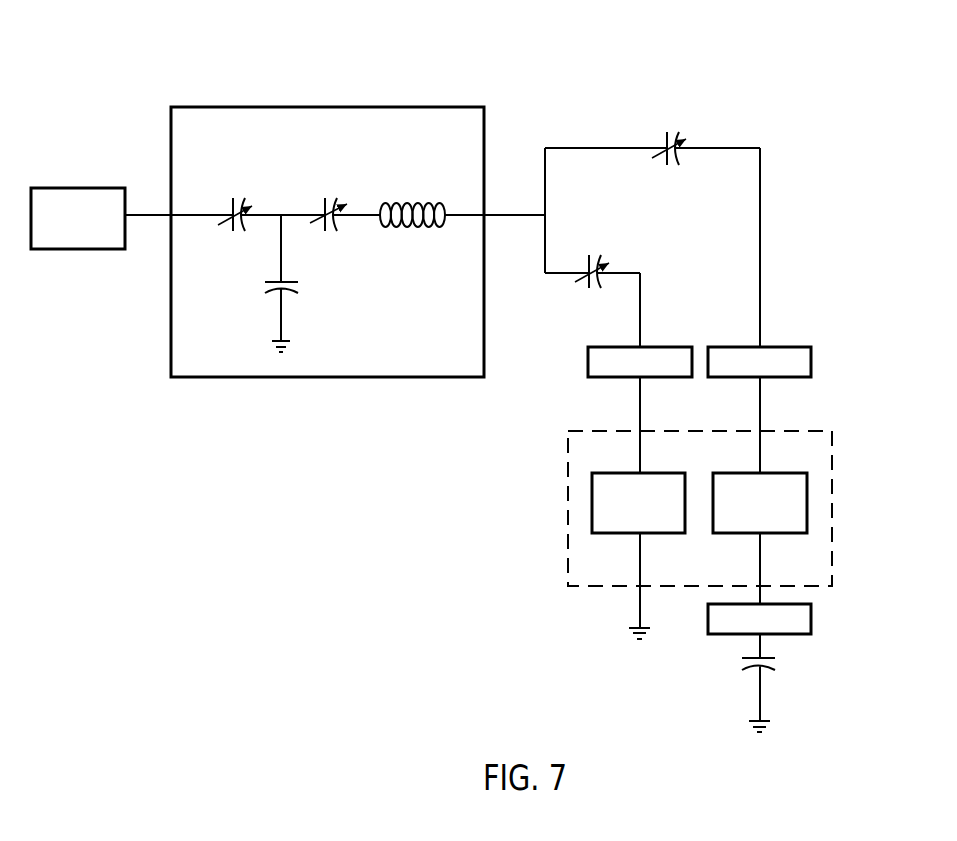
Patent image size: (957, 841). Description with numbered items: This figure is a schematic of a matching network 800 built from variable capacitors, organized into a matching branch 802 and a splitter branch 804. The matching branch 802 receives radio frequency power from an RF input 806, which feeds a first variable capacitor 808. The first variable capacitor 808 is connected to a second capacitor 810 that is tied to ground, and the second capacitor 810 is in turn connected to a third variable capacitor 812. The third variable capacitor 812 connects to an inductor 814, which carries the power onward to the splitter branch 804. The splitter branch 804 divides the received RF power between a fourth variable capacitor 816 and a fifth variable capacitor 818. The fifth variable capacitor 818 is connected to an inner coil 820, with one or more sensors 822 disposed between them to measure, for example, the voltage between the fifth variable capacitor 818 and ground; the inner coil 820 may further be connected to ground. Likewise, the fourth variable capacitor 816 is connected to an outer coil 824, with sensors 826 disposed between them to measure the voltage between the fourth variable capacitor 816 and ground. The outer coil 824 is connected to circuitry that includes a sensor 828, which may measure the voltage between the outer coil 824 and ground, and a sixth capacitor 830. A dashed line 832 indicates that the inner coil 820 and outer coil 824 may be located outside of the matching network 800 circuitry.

The matching network 800 is at (145, 60).
The matching branch 802 is at (315, 107).
The splitter branch 804 is at (823, 136).
The radio-frequency (RF) input 806 is at (63, 187).
The first variable capacitor 808 is at (237, 191).
The second capacitor 810 is at (306, 287).
The third variable capacitor 812 is at (333, 194).
The inductor 814 is at (422, 196).
The fourth variable capacitor 816 is at (673, 127).
The fifth variable capacitor 818 is at (593, 251).
The inner coil 820 is at (653, 473).
The sensors 822 is at (663, 347).
The outer coil 824 is at (770, 473).
The sensors 826 is at (790, 347).
The sensor 828 is at (811, 617).
The sixth capacitor 830 is at (783, 662).
The dashed line 832 is at (568, 450).